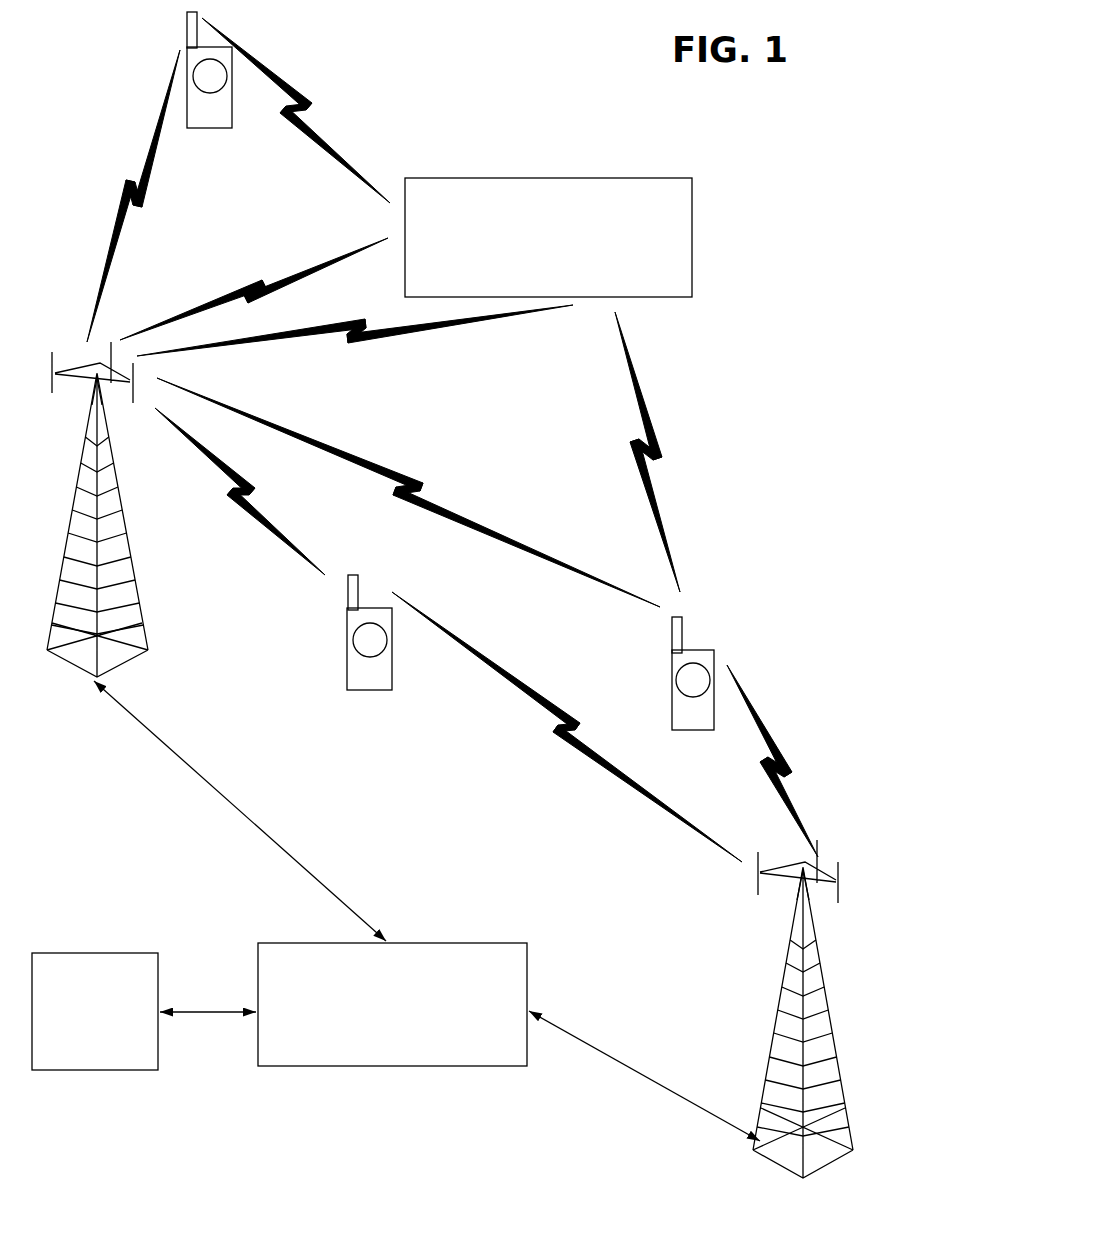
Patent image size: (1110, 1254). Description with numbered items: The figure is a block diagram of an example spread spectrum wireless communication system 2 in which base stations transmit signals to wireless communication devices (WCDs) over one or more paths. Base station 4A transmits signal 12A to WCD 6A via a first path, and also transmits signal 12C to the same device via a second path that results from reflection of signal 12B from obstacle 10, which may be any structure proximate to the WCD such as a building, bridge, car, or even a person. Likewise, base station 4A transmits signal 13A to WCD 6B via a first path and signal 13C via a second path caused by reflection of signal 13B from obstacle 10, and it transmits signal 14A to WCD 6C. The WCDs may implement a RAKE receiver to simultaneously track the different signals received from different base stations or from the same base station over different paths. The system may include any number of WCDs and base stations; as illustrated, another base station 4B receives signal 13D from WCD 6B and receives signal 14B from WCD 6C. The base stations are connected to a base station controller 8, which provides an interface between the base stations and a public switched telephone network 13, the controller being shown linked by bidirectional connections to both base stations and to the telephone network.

The spread spectrum wireless communication system 2 is at (398, 84).
The base station 4A is at (147, 625).
The base station 4B is at (848, 1120).
The WCD 6A is at (212, 142).
The WCD 6B is at (721, 640).
The WCD 6C is at (341, 648).
The base station controller 8 is at (383, 1041).
The obstacle 10 is at (560, 262).
The signal 12A is at (124, 187).
The signal 12B is at (310, 100).
The signal 12C is at (260, 280).
The public switched telephone network 13 is at (81, 1036).
The signal 13A is at (420, 485).
The signal 13B is at (663, 457).
The signal 13C is at (364, 345).
The signal 13D is at (790, 764).
The signal 14A is at (229, 493).
The signal 14B is at (554, 723).